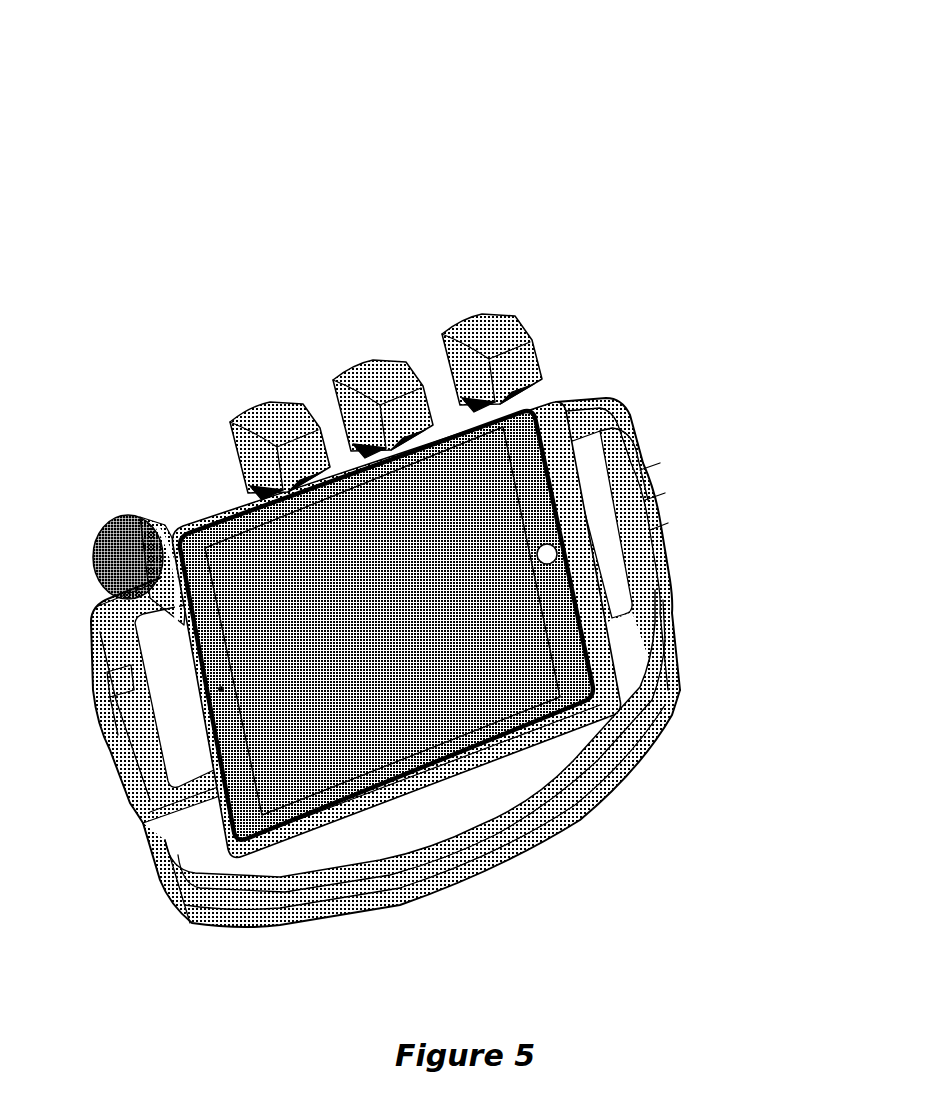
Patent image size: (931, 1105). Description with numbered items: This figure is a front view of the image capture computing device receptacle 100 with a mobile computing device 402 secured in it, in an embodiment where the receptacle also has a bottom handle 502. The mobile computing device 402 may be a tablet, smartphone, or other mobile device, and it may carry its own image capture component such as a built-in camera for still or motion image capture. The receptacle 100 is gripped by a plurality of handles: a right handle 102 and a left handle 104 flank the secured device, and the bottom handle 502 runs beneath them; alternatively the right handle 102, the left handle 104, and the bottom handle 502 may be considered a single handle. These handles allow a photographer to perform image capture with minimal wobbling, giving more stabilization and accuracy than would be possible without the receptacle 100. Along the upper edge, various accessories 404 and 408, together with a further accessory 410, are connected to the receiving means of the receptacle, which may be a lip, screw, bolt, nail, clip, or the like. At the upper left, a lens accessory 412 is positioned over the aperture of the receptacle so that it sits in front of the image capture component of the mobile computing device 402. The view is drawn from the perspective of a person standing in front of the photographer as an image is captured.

The image capture computing device receptacle 100 is at (445, 53).
The right handle 102 is at (621, 420).
The left handle 104 is at (84, 678).
The mobile computing device 402 is at (540, 684).
The accessory 404 is at (256, 430).
The accessory 408 is at (370, 376).
The third clamp 410 is at (482, 338).
The lens accessory 412 is at (175, 532).
The bottom handle 502 is at (537, 838).